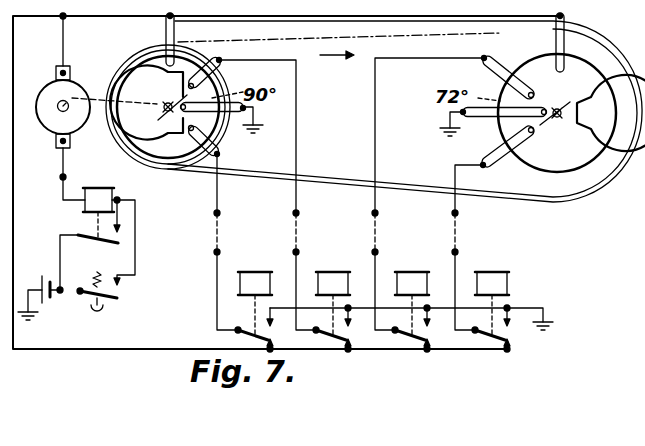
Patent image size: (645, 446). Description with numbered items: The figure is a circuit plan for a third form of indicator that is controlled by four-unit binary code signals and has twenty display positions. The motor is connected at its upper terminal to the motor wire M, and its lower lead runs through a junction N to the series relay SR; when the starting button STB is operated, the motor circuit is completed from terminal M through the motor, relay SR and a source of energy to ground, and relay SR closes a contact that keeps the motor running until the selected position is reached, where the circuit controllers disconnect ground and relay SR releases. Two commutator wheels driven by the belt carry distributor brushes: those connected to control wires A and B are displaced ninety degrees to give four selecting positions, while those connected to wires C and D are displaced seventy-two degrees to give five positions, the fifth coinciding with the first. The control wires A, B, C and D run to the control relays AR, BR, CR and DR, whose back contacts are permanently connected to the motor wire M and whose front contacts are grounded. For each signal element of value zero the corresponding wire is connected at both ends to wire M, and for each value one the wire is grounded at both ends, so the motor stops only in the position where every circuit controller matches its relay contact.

The motor terminal M is at (16, 18).
The junction terminal N is at (50, 179).
The series relay SR is at (97, 228).
The starting button STB is at (67, 286).
The control wire A is at (213, 227).
The control wire B is at (252, 192).
The control wire C is at (454, 192).
The control wire D is at (494, 227).
The control relay AR is at (253, 302).
The control relay BR is at (332, 302).
The control relay CR is at (411, 302).
The control relay DR is at (491, 302).